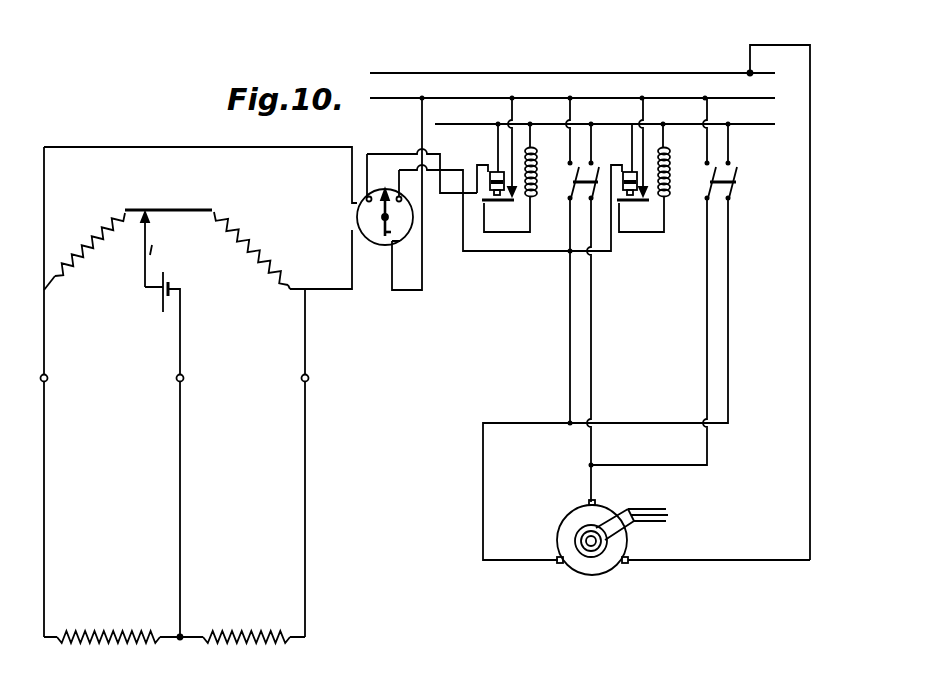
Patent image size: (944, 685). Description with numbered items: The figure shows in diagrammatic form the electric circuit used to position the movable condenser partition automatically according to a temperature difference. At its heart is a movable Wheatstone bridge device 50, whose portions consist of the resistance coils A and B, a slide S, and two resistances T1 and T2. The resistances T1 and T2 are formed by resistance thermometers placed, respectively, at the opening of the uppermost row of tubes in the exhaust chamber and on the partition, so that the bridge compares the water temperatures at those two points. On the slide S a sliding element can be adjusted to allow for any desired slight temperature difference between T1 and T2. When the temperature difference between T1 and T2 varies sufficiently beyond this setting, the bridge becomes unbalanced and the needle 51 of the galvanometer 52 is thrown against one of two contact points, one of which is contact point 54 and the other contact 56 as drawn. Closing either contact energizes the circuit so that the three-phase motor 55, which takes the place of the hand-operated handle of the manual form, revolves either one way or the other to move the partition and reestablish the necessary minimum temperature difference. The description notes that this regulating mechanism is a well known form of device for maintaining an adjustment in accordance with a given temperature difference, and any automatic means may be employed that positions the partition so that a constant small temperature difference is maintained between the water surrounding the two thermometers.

The movable Wheatstone bridge device 50 is at (199, 395).
The needle 51 is at (382, 214).
The galvanometer 52 is at (476, 194).
The contact point 54 is at (398, 196).
The three-phase motor 55 is at (680, 537).
The contact 56 is at (367, 196).
The resistance coil A is at (248, 230).
The resistance coil B is at (92, 228).
The slide S is at (183, 208).
The resistance thermometer T1 is at (108, 625).
The resistance thermometer T2 is at (246, 625).